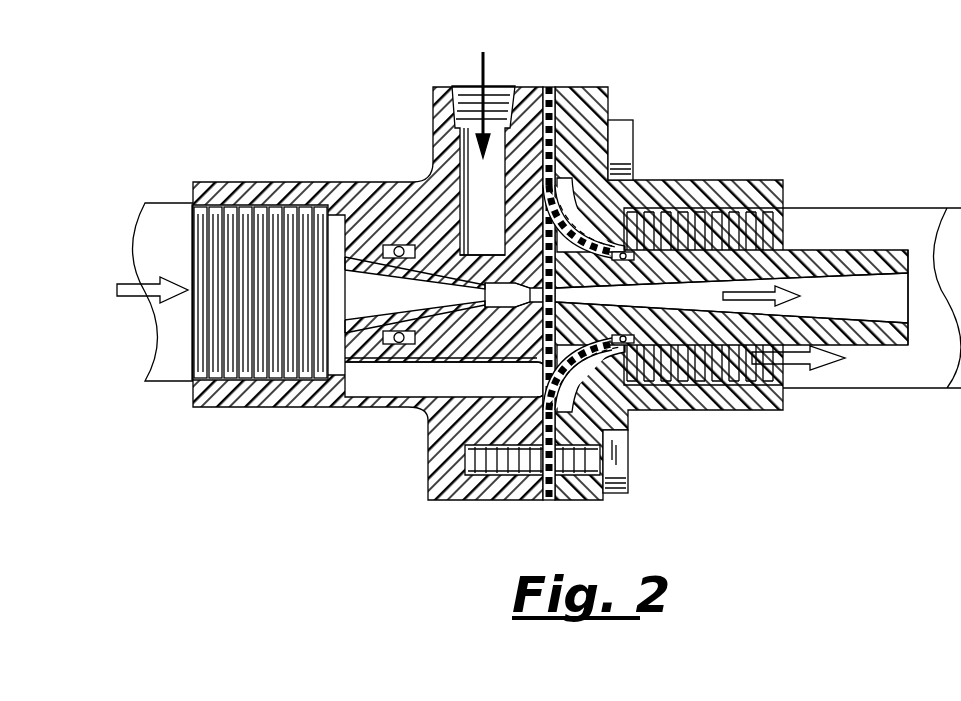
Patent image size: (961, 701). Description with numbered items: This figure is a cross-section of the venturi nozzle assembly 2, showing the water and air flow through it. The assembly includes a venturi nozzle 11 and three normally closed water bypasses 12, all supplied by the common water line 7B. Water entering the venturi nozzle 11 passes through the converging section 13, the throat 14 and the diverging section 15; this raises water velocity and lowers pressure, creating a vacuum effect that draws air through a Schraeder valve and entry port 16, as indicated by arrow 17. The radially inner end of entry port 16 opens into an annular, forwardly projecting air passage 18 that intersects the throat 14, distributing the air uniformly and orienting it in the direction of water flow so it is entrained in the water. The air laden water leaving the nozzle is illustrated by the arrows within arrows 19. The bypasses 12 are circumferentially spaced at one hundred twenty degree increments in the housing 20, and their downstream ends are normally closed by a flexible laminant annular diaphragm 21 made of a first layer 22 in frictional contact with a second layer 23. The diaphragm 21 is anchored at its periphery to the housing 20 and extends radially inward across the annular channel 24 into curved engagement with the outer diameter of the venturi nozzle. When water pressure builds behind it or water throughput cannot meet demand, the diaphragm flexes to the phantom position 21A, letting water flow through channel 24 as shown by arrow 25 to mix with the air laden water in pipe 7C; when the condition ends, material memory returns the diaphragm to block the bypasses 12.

The venturi nozzle assembly 2 is at (354, 172).
The water line 7B is at (170, 203).
The pipe 7C is at (868, 208).
The venturi nozzle 11 is at (440, 284).
The water bypasses 12 is at (412, 378).
The converging section 13 is at (388, 272).
The throat 14 is at (570, 293).
The diverging section 15 is at (800, 280).
The entry port 16 is at (455, 152).
The arrow 17 is at (490, 64).
The air passage 18 is at (506, 241).
The air laden water arrows 19 is at (790, 300).
The housing 20 is at (430, 398).
The laminant annular diaphragm 21 is at (592, 368).
The flexed diaphragm position 21A is at (585, 200).
The first layer 22 is at (514, 412).
The second layer 23 is at (578, 468).
The annular channel 24 is at (618, 392).
The arrow 25 is at (805, 368).